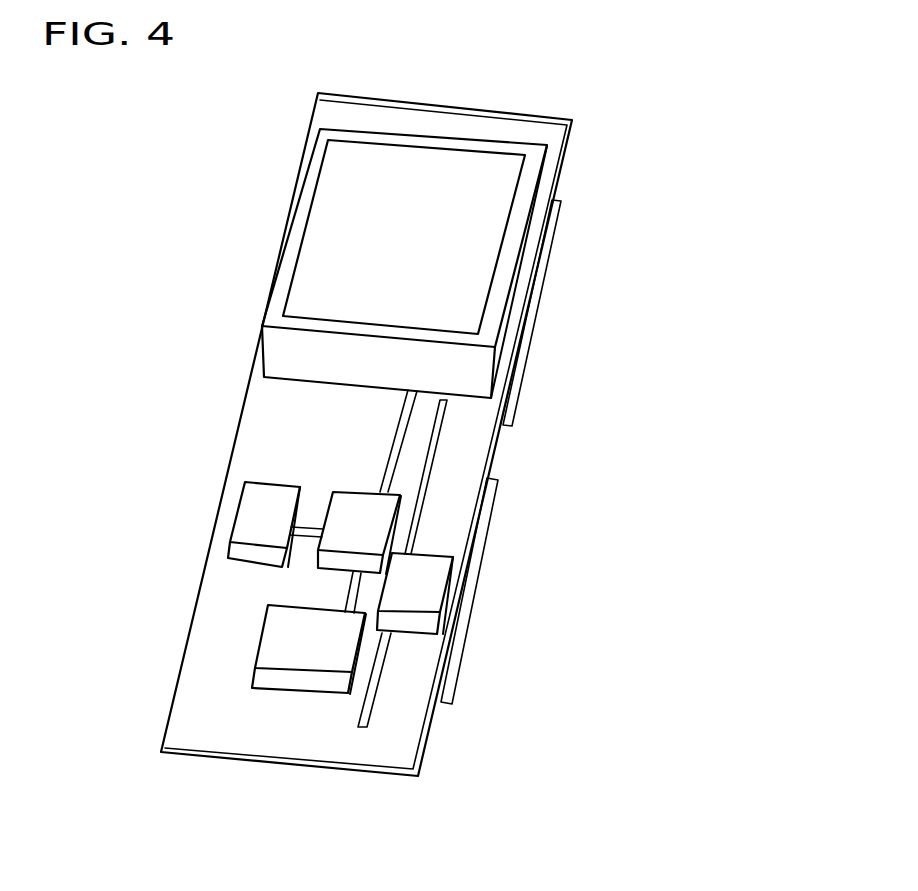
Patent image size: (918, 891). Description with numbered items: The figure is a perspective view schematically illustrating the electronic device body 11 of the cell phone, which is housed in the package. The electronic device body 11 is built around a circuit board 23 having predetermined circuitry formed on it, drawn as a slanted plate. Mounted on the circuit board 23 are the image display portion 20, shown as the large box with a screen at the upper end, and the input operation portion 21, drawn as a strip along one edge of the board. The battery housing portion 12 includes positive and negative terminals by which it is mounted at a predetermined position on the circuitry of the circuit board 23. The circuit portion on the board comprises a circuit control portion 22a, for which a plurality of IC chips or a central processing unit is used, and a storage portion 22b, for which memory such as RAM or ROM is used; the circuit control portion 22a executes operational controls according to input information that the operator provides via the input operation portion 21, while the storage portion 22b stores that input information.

The electronic device body 11 is at (586, 458).
The battery housing portion 12 is at (470, 137).
The image display portion 20 is at (463, 617).
The input operation portion 21 is at (541, 270).
The circuit control portion 22a is at (288, 653).
The storage portion 22b is at (270, 523).
The circuit board 23 is at (272, 420).